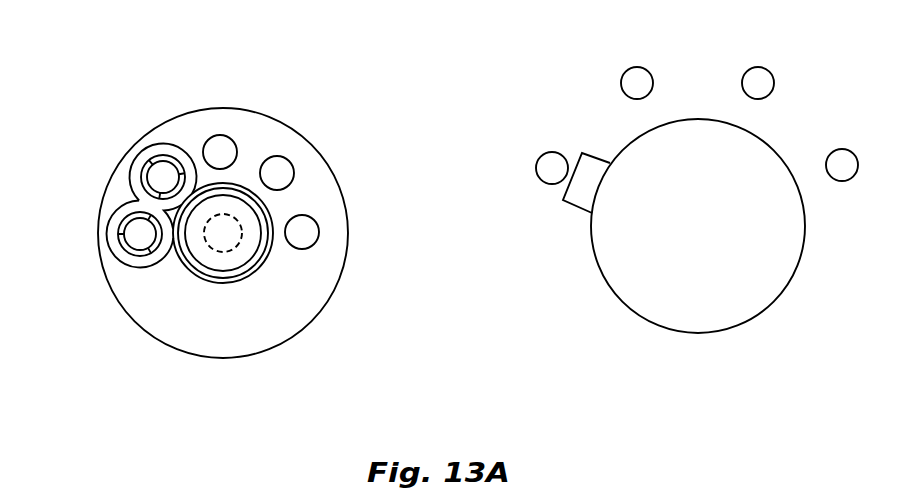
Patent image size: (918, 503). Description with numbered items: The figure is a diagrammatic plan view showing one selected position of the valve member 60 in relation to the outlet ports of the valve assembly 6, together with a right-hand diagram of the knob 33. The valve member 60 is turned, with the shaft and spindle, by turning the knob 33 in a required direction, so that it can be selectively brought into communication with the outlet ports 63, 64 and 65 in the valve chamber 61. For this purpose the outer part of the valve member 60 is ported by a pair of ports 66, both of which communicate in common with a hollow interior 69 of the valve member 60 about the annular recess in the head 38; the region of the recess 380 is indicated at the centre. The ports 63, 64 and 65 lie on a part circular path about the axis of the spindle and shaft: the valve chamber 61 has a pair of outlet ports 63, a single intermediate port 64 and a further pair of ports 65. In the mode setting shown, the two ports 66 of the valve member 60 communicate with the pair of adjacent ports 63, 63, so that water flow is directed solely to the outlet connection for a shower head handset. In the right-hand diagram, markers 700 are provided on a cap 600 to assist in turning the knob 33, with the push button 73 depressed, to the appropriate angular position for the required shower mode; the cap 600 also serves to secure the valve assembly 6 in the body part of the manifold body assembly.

The valve assembly 6 is at (252, 149).
The knob 33 is at (787, 247).
The head 38 is at (228, 258).
The valve member 60 is at (153, 267).
The valve chamber 61 is at (290, 305).
The outlet ports 63 is at (157, 175).
The intermediate port 64 is at (218, 145).
The ports 65 is at (278, 172).
The ports 66 is at (155, 152).
The hollow interior 69 is at (218, 273).
The push button 73 is at (580, 193).
The opening 380 is at (225, 233).
The cap 600 is at (601, 130).
The markers 700 is at (633, 78).